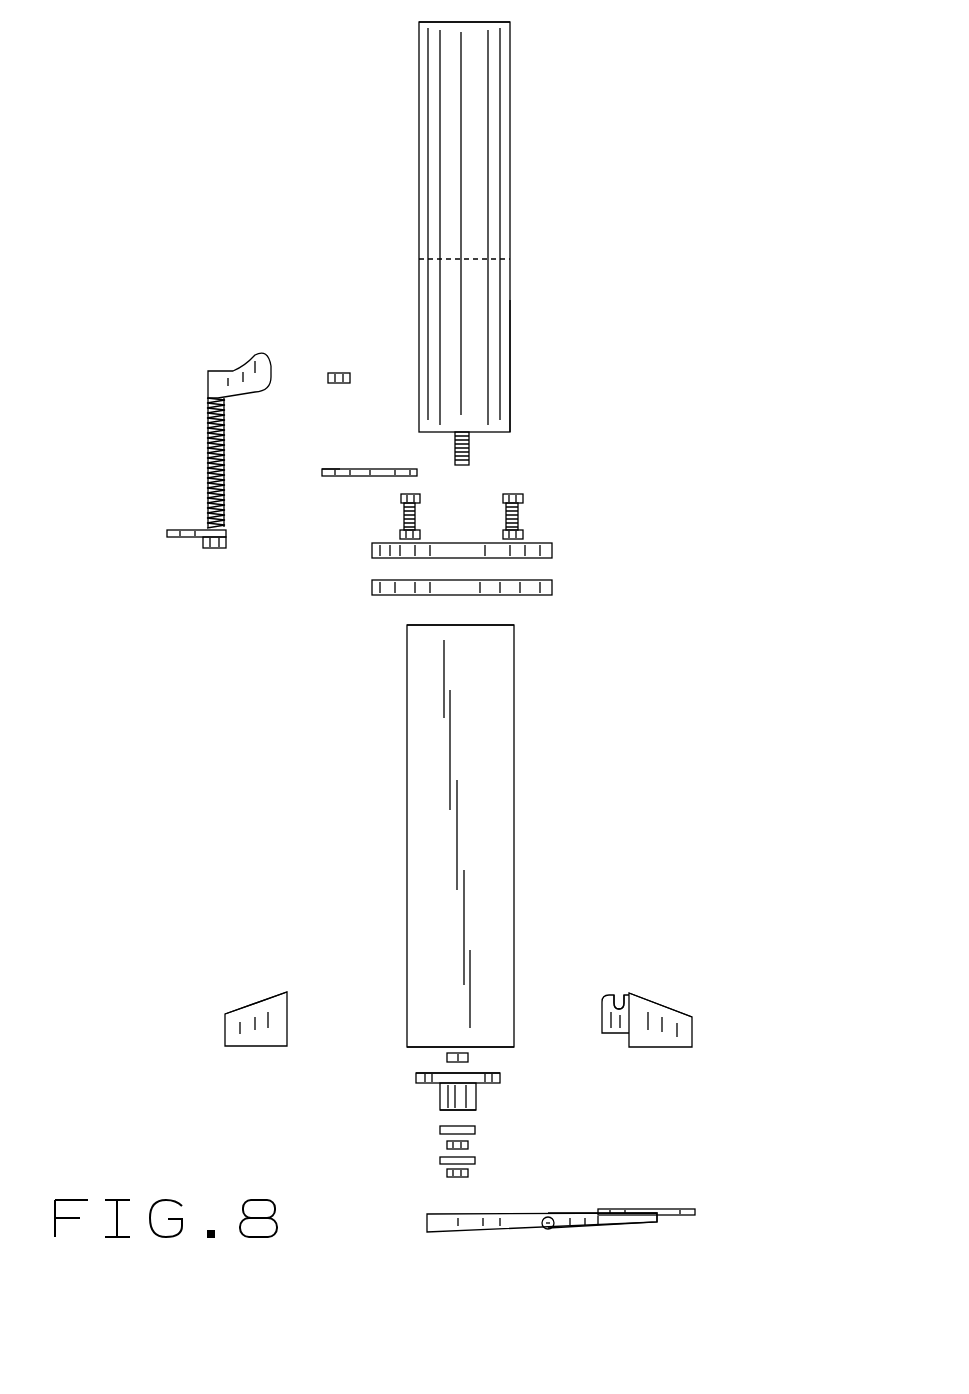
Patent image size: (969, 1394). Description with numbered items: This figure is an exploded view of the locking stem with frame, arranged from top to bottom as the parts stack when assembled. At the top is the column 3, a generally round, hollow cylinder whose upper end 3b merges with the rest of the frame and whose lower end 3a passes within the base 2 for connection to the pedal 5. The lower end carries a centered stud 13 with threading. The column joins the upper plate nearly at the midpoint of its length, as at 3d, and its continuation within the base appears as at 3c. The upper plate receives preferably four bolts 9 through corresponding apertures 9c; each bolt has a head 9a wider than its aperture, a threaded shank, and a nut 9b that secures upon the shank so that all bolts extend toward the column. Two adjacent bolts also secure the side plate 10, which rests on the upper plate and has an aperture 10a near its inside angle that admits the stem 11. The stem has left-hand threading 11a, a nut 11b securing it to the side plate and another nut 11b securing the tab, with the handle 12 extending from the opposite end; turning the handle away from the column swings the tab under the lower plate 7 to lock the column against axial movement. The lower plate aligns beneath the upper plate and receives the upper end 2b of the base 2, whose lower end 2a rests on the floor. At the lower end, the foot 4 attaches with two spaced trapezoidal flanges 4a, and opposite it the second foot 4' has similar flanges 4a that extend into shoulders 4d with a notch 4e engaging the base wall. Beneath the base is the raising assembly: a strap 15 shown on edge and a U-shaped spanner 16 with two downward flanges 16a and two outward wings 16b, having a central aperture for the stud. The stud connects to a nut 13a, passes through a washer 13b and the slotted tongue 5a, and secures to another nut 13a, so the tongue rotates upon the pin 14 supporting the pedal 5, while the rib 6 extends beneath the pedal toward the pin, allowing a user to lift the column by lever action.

The base 2 is at (525, 838).
The lower end of the base 2a is at (406, 1043).
The upper end of the base 2b is at (514, 625).
The column 3 is at (522, 170).
The lower end of the column 3a is at (495, 432).
The upper end of the column 3b is at (510, 22).
The continuation of the column 3c is at (510, 392).
The joining location of column and upper plate 3d is at (510, 259).
The foot 4 is at (233, 1019).
The second foot 4' is at (675, 996).
The flanges 4a is at (262, 1011).
The shoulders 4d is at (602, 1017).
The notch 4e is at (620, 1000).
The pedal 5 is at (655, 1209).
The tongue 5a is at (440, 1232).
The rib 6 is at (615, 1224).
The lower plate 7 is at (552, 588).
The bolts 9 is at (404, 518).
The head 9a is at (400, 535).
The nut 9b is at (401, 498).
The apertures 9c is at (405, 558).
The side plate 10 is at (384, 467).
The aperture 10a is at (330, 468).
The stem 11 is at (185, 400).
The threading 11a is at (207, 440).
The nut 11b is at (214, 549).
The handle 12 is at (245, 362).
The stud 13 is at (469, 450).
The nut 13a is at (447, 1145).
The washer 13b is at (475, 1130).
The pin 14 is at (548, 1229).
The strap 15 is at (468, 1058).
The spanner 16 is at (440, 1093).
The flanges 16a is at (464, 1090).
The wings 16b is at (500, 1078).